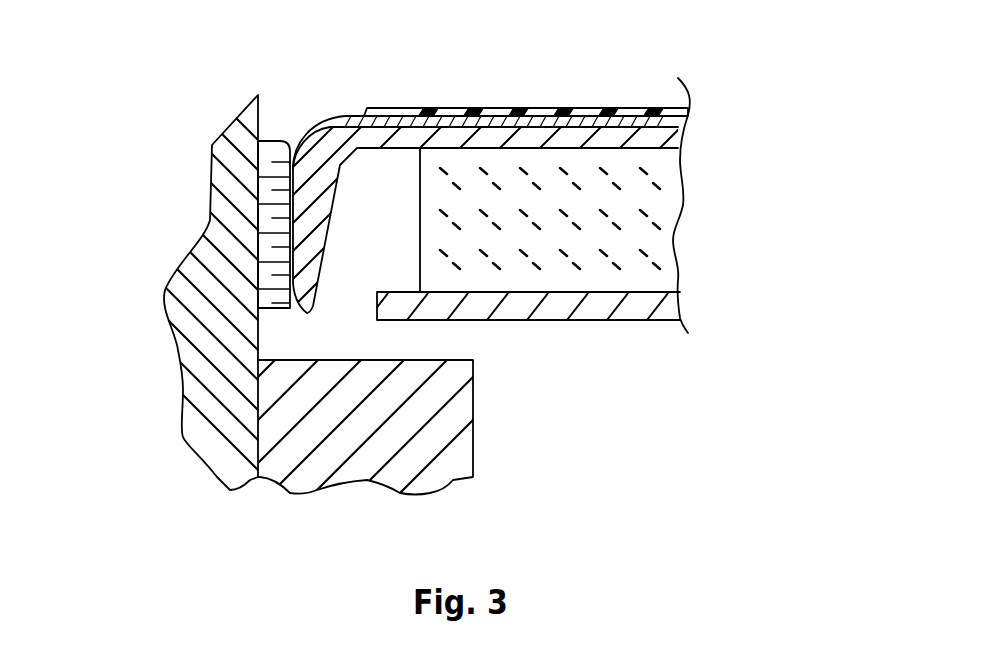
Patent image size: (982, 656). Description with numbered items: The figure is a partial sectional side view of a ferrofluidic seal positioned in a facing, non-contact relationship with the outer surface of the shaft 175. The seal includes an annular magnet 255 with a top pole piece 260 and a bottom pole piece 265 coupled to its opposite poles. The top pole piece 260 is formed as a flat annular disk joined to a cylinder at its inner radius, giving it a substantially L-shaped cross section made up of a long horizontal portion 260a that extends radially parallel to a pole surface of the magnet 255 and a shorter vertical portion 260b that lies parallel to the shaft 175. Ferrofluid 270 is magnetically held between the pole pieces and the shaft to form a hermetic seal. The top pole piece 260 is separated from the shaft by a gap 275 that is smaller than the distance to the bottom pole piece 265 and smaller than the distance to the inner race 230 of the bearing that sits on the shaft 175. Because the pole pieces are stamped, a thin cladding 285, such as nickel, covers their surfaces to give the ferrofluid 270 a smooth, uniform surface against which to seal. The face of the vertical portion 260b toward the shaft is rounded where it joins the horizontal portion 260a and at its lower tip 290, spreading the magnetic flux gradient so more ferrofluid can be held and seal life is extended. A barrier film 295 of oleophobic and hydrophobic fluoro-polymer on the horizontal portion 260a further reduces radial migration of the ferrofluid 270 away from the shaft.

The shaft 175 is at (183, 390).
The inner race 230 is at (477, 433).
The annular magnet 255 is at (677, 217).
The top pole piece 260 is at (489, 159).
The horizontal portion 260a is at (405, 107).
The vertical portion 260b is at (330, 246).
The bottom pole piece 265 is at (590, 322).
The ferrofluid 270 is at (283, 142).
The gap 275 is at (282, 310).
The cladding 285 is at (334, 115).
The tip 290 is at (317, 312).
The barrier film 295 is at (515, 107).